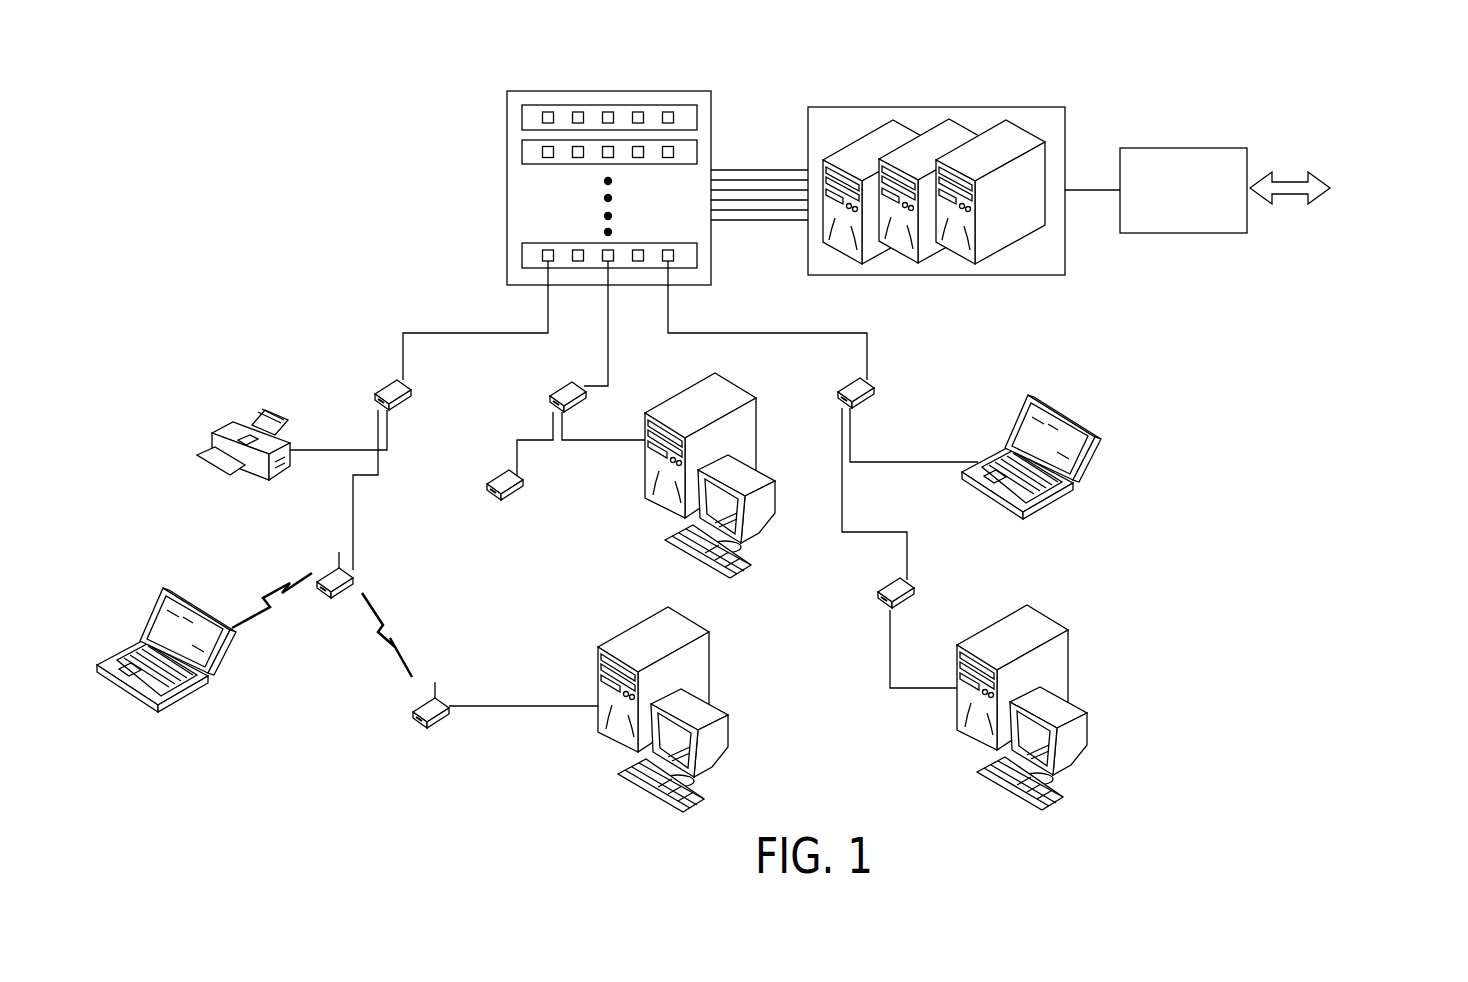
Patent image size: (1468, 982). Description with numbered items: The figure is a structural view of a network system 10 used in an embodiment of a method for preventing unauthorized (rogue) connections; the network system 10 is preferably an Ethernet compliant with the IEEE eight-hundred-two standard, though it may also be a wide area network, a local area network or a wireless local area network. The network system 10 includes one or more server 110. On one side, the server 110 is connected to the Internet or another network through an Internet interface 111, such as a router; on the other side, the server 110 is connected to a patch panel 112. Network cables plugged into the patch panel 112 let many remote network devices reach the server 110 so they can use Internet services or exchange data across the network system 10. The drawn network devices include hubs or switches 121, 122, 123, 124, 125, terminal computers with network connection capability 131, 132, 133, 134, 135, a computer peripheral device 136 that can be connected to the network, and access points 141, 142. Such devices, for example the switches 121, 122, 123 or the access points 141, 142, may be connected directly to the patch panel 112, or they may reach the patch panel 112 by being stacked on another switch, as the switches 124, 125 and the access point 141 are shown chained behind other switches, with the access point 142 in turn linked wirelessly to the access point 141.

The network system 10 is at (356, 238).
The server 110 is at (945, 107).
The Internet interface 111 is at (1160, 148).
The patch panel 112 is at (553, 91).
The hub or switch 121 is at (383, 385).
The hub or switch 122 is at (563, 383).
The hub or switch 123 is at (875, 390).
The hub or switch 124 is at (495, 476).
The hub or switch 125 is at (913, 591).
The terminal computer 131 is at (1079, 420).
The terminal computer 132 is at (758, 418).
The terminal computer 133 is at (1068, 660).
The terminal computer 134 is at (709, 655).
The terminal computer 135 is at (188, 600).
The computer peripheral device 136 is at (222, 428).
The access point 141 is at (362, 576).
The access point 142 is at (435, 683).